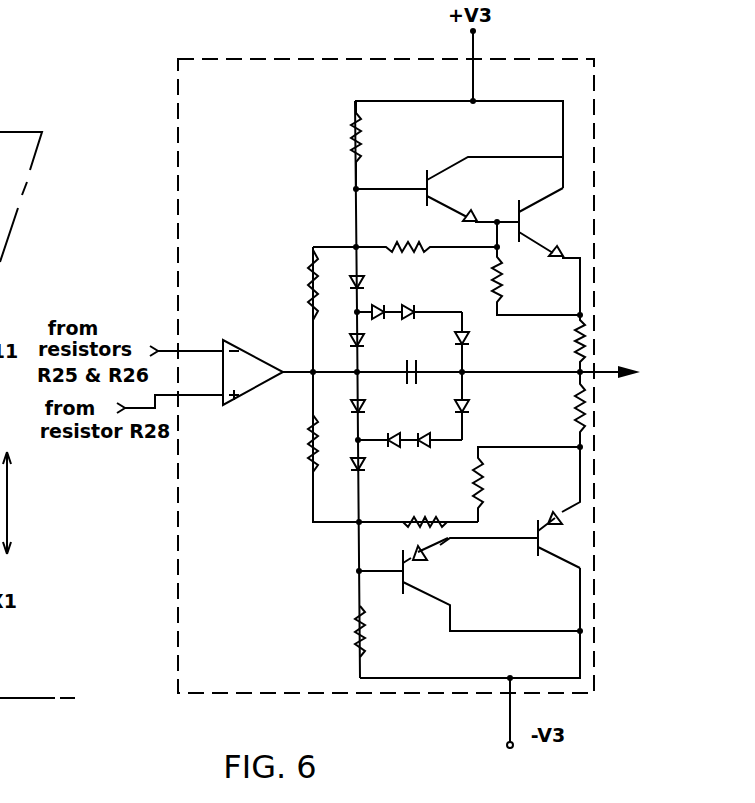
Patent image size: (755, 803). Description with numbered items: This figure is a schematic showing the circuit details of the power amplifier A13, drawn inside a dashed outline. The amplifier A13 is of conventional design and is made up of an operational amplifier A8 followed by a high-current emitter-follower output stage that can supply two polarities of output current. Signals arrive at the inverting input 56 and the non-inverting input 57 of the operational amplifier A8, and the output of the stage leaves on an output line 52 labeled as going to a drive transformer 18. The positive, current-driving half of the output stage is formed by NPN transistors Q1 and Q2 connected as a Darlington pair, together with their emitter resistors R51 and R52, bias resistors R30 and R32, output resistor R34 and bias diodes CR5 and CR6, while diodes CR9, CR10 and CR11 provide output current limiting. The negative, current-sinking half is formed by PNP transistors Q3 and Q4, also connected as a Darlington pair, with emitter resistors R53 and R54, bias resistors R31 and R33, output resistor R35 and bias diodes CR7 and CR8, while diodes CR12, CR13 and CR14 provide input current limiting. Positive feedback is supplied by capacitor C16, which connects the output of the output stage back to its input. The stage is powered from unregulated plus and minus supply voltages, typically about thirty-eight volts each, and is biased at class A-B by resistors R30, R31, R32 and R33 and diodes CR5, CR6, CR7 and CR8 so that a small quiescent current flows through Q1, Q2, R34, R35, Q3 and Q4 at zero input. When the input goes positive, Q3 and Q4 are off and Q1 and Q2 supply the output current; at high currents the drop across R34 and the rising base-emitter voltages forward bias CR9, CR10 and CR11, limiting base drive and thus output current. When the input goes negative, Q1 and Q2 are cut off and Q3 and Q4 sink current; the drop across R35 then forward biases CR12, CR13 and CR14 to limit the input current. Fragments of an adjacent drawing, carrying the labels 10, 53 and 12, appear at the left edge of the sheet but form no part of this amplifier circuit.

The power amplifier A13 is at (528, 58).
The operational amplifier A8 is at (244, 345).
The inverting input 56 is at (162, 350).
The non-inverting input 57 is at (200, 396).
The bias resistor R32 is at (361, 135).
The NPN transistor Q1 is at (425, 185).
The NPN transistor Q2 is at (518, 222).
The emitter resistor R51 is at (398, 252).
The emitter resistor R52 is at (501, 294).
The bias diode CR5 is at (354, 282).
The bias diode CR6 is at (355, 332).
The bias diode CR7 is at (355, 408).
The bias diode CR8 is at (355, 466).
The output current limiting diode CR9 is at (416, 306).
The output current limiting diode CR10 is at (378, 310).
The output current limiting diode CR11 is at (468, 340).
The input current limiting diode CR12 is at (470, 408).
The input current limiting diode CR13 is at (430, 443).
The input current limiting diode CR14 is at (394, 434).
The capacitor C16 is at (414, 366).
The bias resistor R30 is at (311, 268).
The bias resistor R31 is at (310, 448).
The bias resistor R33 is at (357, 630).
The output resistor R34 is at (584, 330).
The output resistor R35 is at (586, 418).
The emitter resistor R53 is at (484, 481).
The emitter resistor R54 is at (444, 520).
The PNP transistor Q3 is at (560, 520).
The PNP transistor Q4 is at (420, 565).
The output line 52 is at (600, 370).
The drive transformer 18 is at (702, 374).
The housing 10 is at (20, 256).
The dimension 53 is at (7, 505).
The base 12 is at (0, 690).